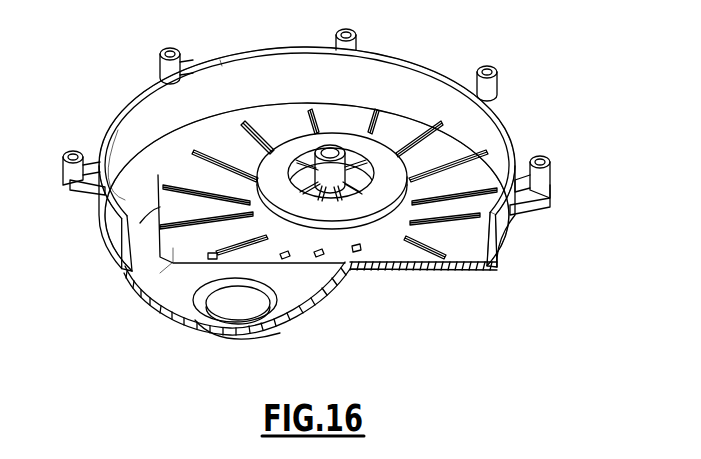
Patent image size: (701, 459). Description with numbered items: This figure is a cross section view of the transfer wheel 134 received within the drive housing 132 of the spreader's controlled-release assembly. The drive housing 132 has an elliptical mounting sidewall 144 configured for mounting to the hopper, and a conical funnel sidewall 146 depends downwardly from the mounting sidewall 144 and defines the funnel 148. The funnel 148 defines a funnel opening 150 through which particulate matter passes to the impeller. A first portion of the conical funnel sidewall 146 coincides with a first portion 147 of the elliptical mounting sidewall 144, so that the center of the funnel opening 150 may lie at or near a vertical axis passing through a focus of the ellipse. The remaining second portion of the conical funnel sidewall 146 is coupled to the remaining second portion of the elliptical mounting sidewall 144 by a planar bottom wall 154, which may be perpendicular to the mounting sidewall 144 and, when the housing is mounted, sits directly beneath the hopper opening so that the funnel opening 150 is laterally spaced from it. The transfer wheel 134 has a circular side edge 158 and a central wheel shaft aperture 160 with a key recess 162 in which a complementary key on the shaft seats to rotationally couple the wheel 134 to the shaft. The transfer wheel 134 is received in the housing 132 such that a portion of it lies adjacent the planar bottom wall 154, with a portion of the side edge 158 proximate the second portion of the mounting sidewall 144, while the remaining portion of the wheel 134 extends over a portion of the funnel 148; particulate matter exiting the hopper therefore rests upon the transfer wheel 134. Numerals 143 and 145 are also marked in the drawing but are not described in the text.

The drive housing 132 is at (430, 70).
The elliptical mounting sidewall 144 is at (218, 50).
The inner surface of side wall 143 is at (143, 110).
The first portion of elliptical mounting sidewall 147 is at (132, 177).
The mounting boss 145 is at (483, 243).
The circular side edge 158 is at (498, 263).
The transfer wheel 134 is at (462, 248).
The conical funnel sidewall 146 is at (298, 306).
The planar bottom wall 154 is at (398, 268).
The key recess 162 is at (390, 118).
The central wheel shaft aperture 160 is at (331, 147).
The funnel opening 150 is at (240, 335).
The funnel 148 is at (174, 284).